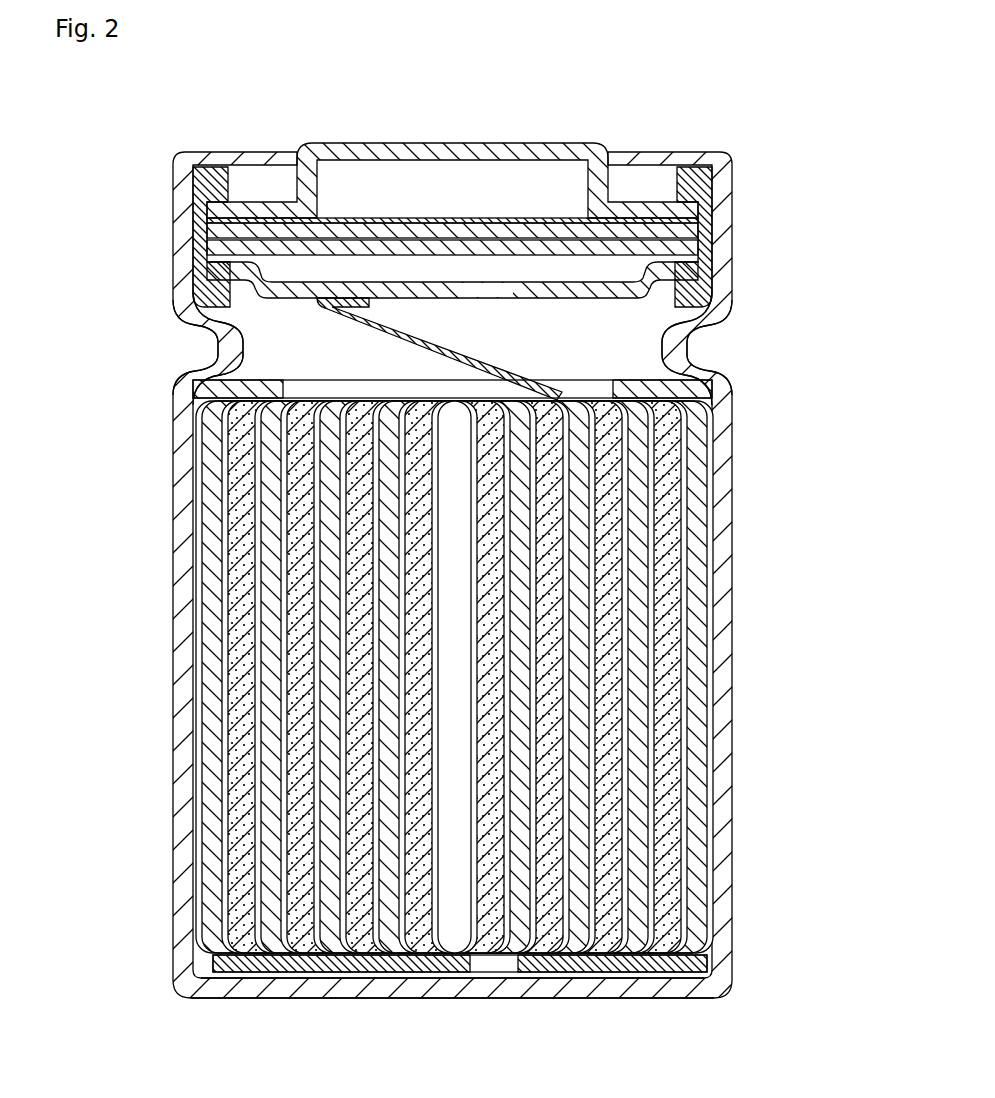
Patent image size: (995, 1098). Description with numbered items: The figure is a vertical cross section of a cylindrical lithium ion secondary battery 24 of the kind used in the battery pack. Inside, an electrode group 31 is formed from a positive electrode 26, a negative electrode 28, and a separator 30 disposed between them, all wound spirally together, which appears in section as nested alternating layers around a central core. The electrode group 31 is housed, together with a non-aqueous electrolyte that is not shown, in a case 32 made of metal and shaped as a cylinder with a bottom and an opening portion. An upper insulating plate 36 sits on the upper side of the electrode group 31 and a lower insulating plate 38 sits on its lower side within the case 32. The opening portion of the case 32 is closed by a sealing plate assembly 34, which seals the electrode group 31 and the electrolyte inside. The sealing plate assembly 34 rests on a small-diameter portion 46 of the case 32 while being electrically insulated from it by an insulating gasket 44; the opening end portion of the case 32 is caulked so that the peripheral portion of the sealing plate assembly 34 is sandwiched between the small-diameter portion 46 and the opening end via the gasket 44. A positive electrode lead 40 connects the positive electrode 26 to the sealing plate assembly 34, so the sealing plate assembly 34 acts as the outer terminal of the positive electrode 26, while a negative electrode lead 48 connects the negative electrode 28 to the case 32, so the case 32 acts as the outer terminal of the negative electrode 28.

The lithium ion secondary battery 24 is at (507, 186).
The positive electrode 26 is at (703, 776).
The negative electrode 28 is at (793, 590).
The separator 30 is at (716, 600).
The electrode group 31 is at (526, 677).
The case 32 is at (178, 558).
The sealing plate assembly 34 is at (365, 144).
The upper insulating plate 36 is at (714, 392).
The lower insulating plate 38 is at (720, 962).
The positive electrode lead 40 is at (492, 370).
The insulating gasket 44 is at (707, 226).
The small-diameter portion 46 is at (173, 332).
The negative electrode lead 48 is at (506, 988).